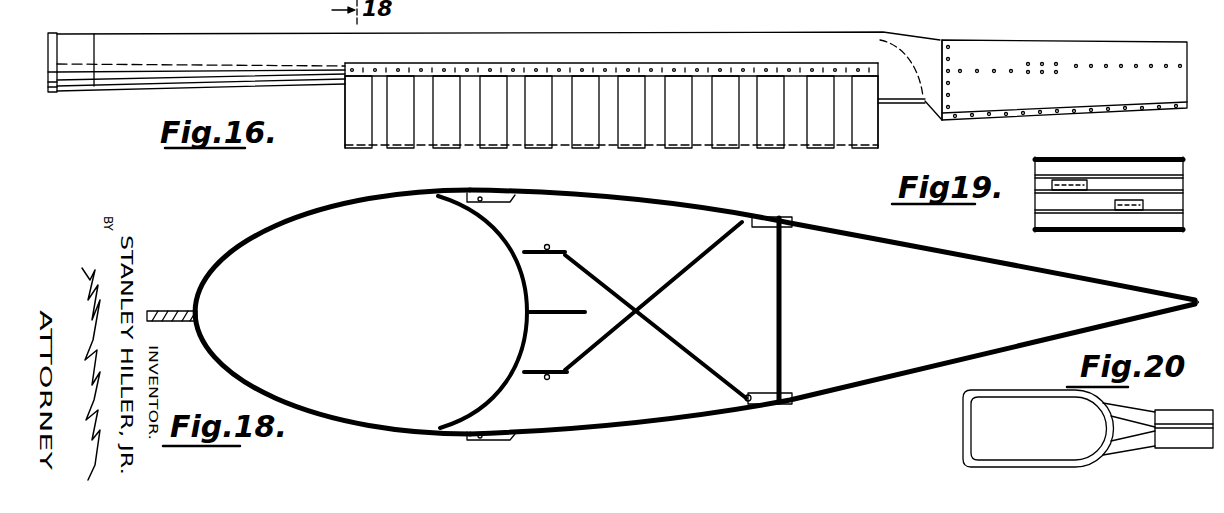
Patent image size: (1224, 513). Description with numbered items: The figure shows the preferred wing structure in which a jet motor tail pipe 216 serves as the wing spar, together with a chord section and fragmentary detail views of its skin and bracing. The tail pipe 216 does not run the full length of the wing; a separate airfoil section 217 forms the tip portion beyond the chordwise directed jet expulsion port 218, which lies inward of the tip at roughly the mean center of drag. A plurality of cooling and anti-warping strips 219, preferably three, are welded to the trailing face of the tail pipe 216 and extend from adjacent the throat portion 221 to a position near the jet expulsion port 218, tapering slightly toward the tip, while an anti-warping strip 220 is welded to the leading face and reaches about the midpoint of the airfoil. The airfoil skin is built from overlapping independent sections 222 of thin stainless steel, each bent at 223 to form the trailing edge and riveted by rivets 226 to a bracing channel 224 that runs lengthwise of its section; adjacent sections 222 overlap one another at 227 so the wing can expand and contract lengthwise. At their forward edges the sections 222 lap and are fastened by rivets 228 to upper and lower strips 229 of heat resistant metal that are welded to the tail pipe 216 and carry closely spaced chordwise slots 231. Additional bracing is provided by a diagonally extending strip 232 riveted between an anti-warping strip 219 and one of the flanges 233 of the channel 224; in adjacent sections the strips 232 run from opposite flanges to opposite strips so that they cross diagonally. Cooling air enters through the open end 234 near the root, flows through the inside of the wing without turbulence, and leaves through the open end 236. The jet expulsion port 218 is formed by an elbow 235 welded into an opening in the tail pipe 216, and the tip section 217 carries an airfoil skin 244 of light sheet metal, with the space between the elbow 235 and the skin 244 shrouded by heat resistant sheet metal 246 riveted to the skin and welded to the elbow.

In FIG. 16, the jet motor tail pipe 216 is at (778, 26).
In FIG. 18, the jet motor tail pipe 216 is at (290, 224).
In FIG. 16, the separate airfoil section 217 is at (1110, 50).
In FIG. 20, the separate airfoil section 217 is at (1208, 404).
In FIG. 16, the jet expulsion port 218 is at (905, 104).
In FIG. 20, the jet expulsion port 218 is at (983, 425).
In FIG. 16, the cooling and anti-warping strips 219 is at (306, 88).
In FIG. 19, the cooling and anti-warping strips 219 is at (1052, 192).
In FIG. 18, the cooling and anti-warping strips 219 is at (527, 250).
In FIG. 16, the anti-warping strip 220 is at (398, 34).
In FIG. 18, the anti-warping strip 220 is at (150, 310).
In FIG. 16, the throat portion 221 is at (255, 70).
In FIG. 16, the overlapping independent sections 222 is at (718, 8).
In FIG. 19, the overlapping independent sections 222 is at (1122, 156).
In FIG. 18, the overlapping independent sections 222 is at (563, 190).
In FIG. 18, the bend forming trailing edge 223 is at (1195, 300).
In FIG. 18, the bracing channel 224 is at (785, 288).
In FIG. 18, the rivets 226 is at (775, 220).
In FIG. 16, the overlap 227 is at (570, 148).
In FIG. 19, the overlap 227 is at (1148, 157).
In FIG. 18, the overlap 227 is at (607, 194).
In FIG. 16, the rivets 228 is at (549, 66).
In FIG. 18, the rivets 228 is at (480, 195).
In FIG. 16, the upper and lower strips 229 is at (388, 66).
In FIG. 18, the upper and lower strips 229 is at (455, 190).
In FIG. 16, the chordwise directed slots 231 is at (686, 66).
In FIG. 19, the diagonally extending strip 232 is at (1118, 204).
In FIG. 18, the diagonally extending strip 232 is at (670, 330).
In FIG. 18, the flanges 233 is at (748, 393).
In FIG. 16, the open end 234 is at (343, 135).
In FIG. 19, the open end 234 is at (1053, 163).
In FIG. 16, the elbow 235 is at (897, 38).
In FIG. 16, the open end 236 is at (880, 136).
In FIG. 16, the airfoil skin 244 is at (1030, 50).
In FIG. 16, the sheet metal shroud 246 is at (920, 48).
In FIG. 20, the sheet metal shroud 246 is at (1113, 447).